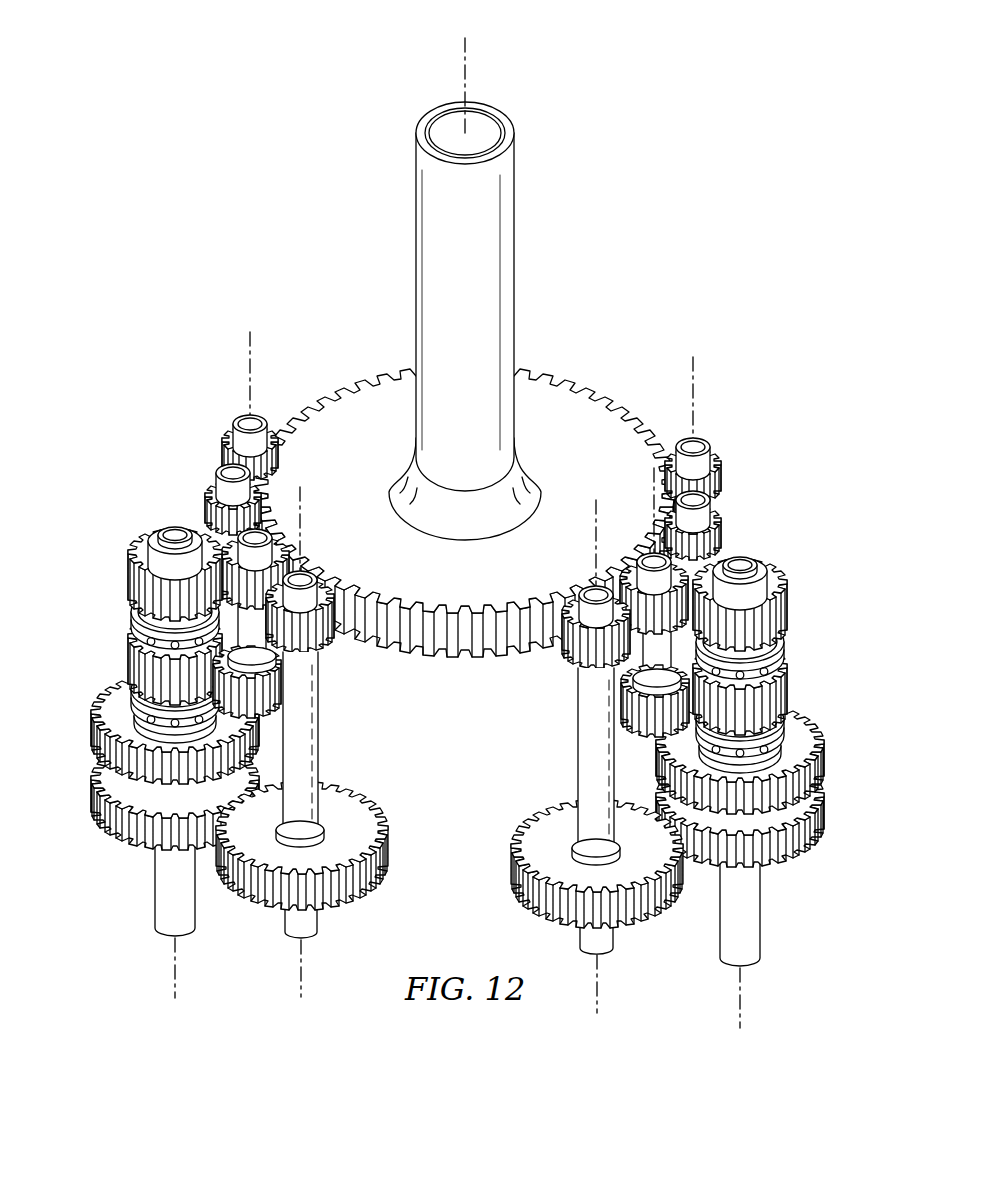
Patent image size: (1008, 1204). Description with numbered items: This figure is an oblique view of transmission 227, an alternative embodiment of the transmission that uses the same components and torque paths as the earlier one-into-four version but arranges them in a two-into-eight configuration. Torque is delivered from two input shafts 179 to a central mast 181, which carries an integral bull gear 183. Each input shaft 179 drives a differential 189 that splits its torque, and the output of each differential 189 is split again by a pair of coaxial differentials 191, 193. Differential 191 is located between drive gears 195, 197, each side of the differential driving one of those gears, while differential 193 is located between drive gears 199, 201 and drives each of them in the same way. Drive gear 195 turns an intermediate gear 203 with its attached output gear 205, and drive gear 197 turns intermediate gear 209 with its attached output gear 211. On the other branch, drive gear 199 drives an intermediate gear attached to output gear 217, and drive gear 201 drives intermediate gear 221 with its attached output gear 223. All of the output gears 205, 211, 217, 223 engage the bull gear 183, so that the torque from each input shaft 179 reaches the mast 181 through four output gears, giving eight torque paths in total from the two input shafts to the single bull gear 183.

The transmission 227 is at (386, 57).
The mast 181 is at (418, 233).
The bull gear 183 is at (618, 398).
The output gear 217 is at (228, 447).
The output gear 205 is at (208, 487).
The intermediate gear 203 is at (200, 512).
The drive gear 195 is at (135, 552).
The coaxial differential 191 is at (460, 644).
The drive gear 197 is at (128, 655).
The differential 189 is at (124, 693).
The drive gear 201 is at (95, 788).
The coaxial differential 193 is at (175, 805).
The input shaft 179 is at (153, 910).
The output gear 223 is at (297, 648).
The output gear 211 is at (258, 618).
The intermediate gear 209 is at (278, 698).
The drive gear 199 is at (262, 728).
The intermediate gear 221 is at (385, 848).